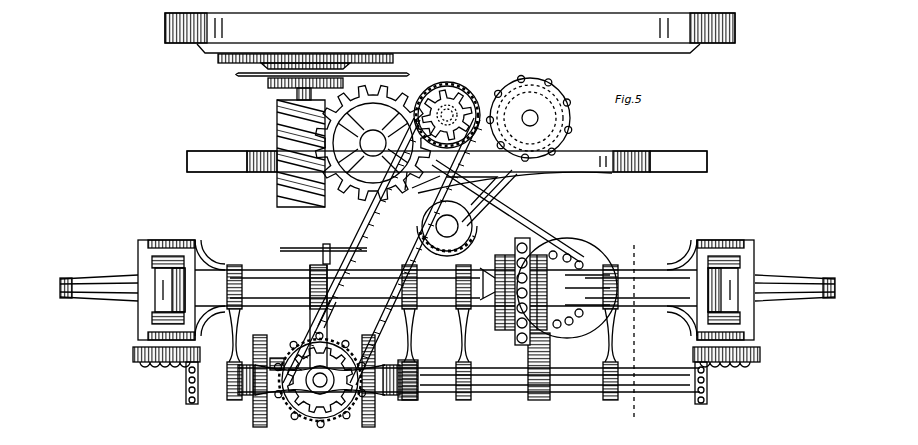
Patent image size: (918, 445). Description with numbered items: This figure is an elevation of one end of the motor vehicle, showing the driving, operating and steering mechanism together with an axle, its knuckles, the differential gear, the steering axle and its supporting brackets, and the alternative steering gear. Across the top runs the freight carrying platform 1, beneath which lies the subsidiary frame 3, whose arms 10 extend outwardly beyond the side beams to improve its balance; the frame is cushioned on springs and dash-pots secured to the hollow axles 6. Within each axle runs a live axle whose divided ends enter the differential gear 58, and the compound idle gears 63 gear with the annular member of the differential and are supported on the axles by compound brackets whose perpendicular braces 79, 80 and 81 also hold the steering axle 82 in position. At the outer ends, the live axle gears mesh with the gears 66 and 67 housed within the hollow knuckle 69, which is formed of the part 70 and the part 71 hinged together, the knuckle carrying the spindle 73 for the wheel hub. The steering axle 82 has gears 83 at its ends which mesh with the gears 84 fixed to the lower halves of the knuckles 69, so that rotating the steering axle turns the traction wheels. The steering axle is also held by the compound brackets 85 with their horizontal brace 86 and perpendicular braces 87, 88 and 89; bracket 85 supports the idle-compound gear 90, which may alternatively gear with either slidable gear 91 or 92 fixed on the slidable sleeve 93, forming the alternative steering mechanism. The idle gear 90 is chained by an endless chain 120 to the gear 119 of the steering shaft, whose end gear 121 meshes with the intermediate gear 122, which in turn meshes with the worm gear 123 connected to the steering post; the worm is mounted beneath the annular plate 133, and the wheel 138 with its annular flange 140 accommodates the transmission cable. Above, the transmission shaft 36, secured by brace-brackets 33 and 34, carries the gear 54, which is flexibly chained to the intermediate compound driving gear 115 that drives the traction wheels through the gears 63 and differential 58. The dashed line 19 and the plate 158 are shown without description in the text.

The platform 1 is at (450, 28).
The subsidiary frame 3 is at (577, 149).
The axles 6 is at (446, 281).
The arms 10 is at (220, 151).
The section line 19 is at (634, 336).
The brace-bracket 33 is at (540, 178).
The brace-bracket 34 is at (508, 212).
The transmission shaft 36 is at (460, 226).
The gear 54 is at (505, 291).
The differential gear 58 is at (513, 300).
The compound idle gears 63 is at (580, 258).
The gear 66 is at (152, 262).
The gear 67 is at (152, 318).
The knuckle 69 is at (446, 290).
The part 70 is at (140, 270).
The part 71 is at (196, 260).
The spindles 73 is at (106, 296).
The perpendicular brace 79 is at (463, 398).
The perpendicular brace 80 is at (539, 398).
The perpendicular brace 81 is at (611, 398).
The steering axle 82 is at (672, 393).
The gears 83 is at (188, 396).
The gears 84 is at (133, 354).
The compound brackets 85 is at (372, 332).
The horizontal brace 86 is at (319, 380).
The perpendicular brace 87 is at (234, 400).
The perpendicular brace 88 is at (322, 330).
The perpendicular brace 89 is at (410, 398).
The idle-compound gear 90 is at (318, 398).
The slidable gear 91 is at (258, 410).
The slidable gear 92 is at (372, 410).
The slidable sleeve 93 is at (276, 358).
The intermediate compound gear 115 is at (545, 102).
The gears 119 is at (437, 84).
The endless chains 120 is at (362, 238).
The gears 121 is at (460, 86).
The intermediate gears 122 is at (357, 193).
The worm gear 123 is at (279, 138).
The annular plate 133 is at (212, 60).
The wheel 138 is at (238, 74).
The annular flange 140 is at (275, 86).
The lower plate 158 is at (476, 46).